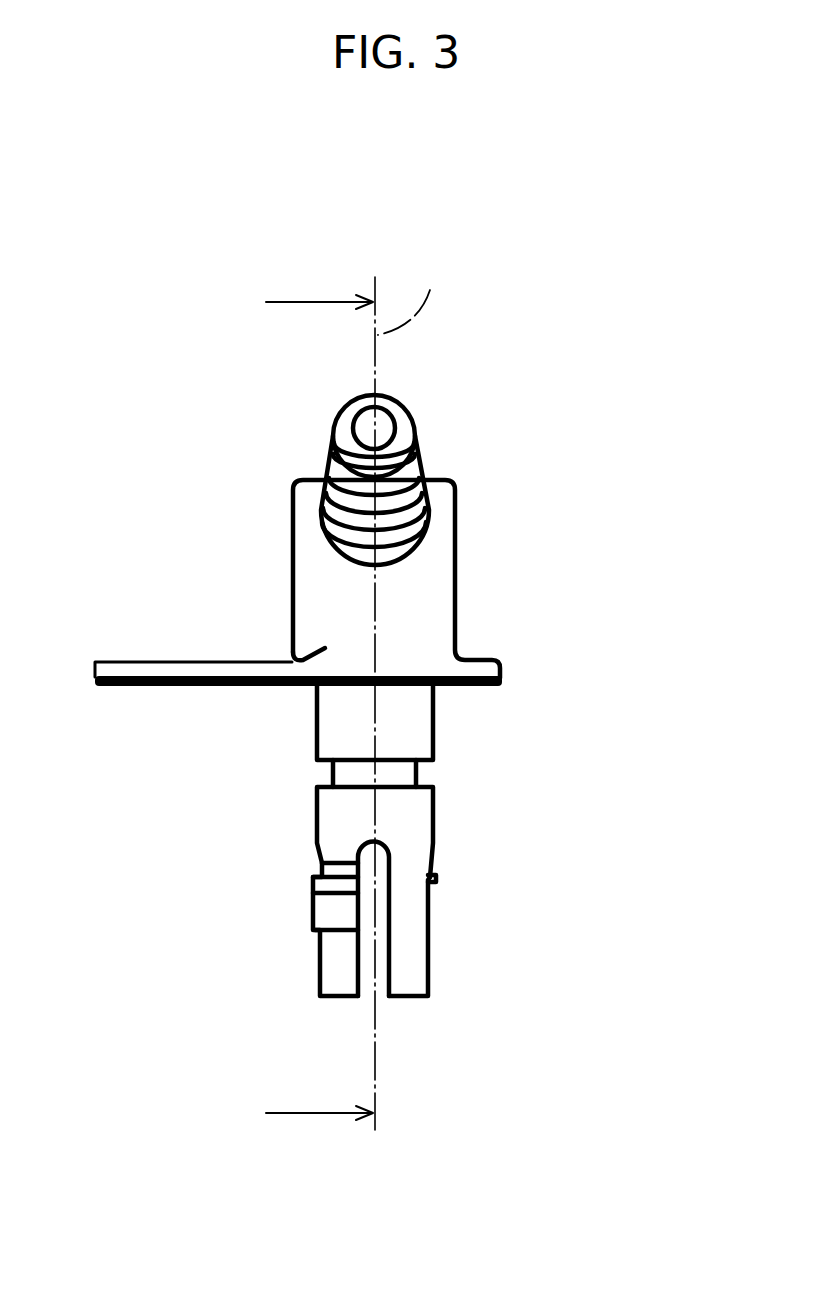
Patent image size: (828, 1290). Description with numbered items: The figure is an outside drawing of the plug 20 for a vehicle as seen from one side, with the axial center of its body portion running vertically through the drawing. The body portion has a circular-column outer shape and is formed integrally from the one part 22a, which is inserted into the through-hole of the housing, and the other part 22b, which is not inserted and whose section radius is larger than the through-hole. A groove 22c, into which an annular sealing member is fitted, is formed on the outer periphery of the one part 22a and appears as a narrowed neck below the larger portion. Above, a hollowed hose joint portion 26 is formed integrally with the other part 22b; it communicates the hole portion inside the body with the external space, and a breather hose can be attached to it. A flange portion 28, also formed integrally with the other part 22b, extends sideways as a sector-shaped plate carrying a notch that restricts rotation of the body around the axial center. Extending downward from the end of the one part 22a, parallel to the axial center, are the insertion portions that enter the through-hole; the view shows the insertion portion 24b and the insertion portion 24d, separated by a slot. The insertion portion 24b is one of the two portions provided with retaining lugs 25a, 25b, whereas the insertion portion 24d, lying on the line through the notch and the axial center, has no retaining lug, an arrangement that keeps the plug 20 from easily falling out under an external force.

The plug 20 is at (535, 316).
The hose joint portion 26 is at (422, 468).
The flange portion 28 is at (193, 668).
The one part 22a is at (415, 720).
The other part 22b is at (415, 632).
The groove 22c is at (418, 772).
The insertion portion 24b is at (337, 978).
The insertion portion 24d is at (417, 978).
The retaining lug 25a is at (433, 893).
The retaining lug 25b is at (333, 907).